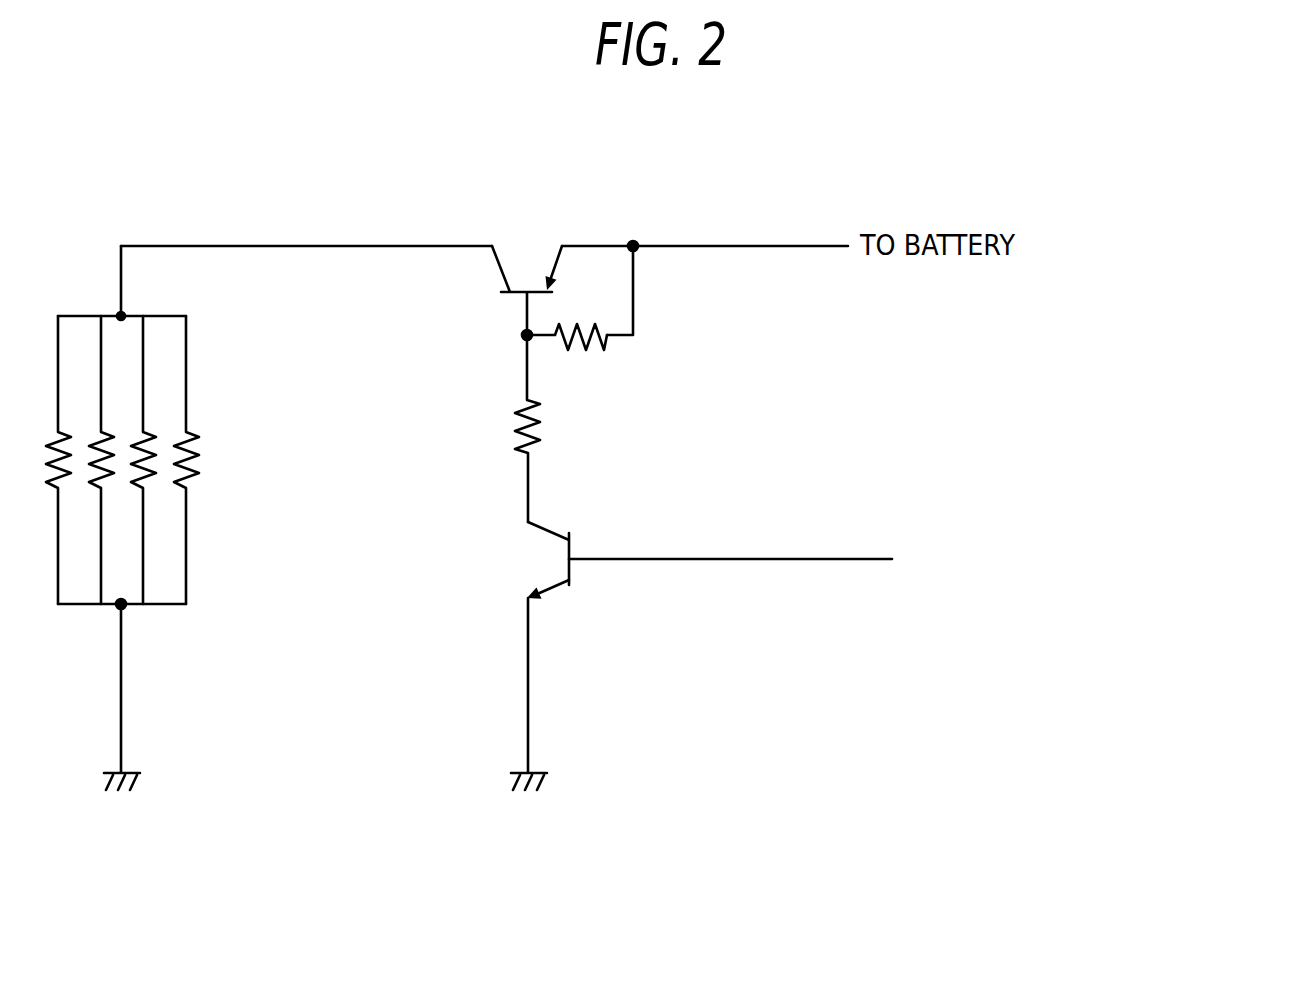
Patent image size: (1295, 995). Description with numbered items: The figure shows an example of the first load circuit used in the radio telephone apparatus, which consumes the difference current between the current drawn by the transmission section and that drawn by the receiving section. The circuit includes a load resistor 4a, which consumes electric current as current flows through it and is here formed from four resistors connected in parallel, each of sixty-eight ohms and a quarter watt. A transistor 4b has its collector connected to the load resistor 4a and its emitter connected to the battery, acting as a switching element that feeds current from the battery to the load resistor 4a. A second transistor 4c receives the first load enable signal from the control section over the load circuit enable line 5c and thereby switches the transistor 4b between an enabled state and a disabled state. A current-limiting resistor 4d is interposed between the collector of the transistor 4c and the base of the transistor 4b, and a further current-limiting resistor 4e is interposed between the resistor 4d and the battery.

The load resistor 4a is at (210, 336).
The transistor 4b is at (572, 214).
The transistor 4c is at (588, 536).
The resistor 4d is at (552, 448).
The resistor 4e is at (599, 363).
The load circuit enable line 5c is at (797, 559).